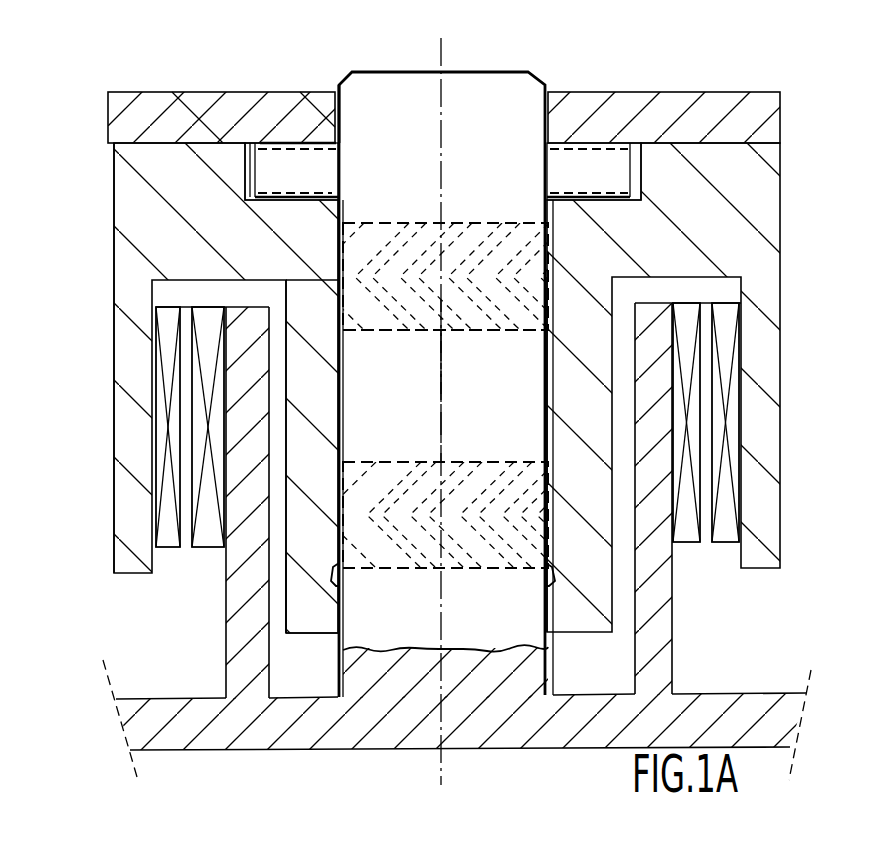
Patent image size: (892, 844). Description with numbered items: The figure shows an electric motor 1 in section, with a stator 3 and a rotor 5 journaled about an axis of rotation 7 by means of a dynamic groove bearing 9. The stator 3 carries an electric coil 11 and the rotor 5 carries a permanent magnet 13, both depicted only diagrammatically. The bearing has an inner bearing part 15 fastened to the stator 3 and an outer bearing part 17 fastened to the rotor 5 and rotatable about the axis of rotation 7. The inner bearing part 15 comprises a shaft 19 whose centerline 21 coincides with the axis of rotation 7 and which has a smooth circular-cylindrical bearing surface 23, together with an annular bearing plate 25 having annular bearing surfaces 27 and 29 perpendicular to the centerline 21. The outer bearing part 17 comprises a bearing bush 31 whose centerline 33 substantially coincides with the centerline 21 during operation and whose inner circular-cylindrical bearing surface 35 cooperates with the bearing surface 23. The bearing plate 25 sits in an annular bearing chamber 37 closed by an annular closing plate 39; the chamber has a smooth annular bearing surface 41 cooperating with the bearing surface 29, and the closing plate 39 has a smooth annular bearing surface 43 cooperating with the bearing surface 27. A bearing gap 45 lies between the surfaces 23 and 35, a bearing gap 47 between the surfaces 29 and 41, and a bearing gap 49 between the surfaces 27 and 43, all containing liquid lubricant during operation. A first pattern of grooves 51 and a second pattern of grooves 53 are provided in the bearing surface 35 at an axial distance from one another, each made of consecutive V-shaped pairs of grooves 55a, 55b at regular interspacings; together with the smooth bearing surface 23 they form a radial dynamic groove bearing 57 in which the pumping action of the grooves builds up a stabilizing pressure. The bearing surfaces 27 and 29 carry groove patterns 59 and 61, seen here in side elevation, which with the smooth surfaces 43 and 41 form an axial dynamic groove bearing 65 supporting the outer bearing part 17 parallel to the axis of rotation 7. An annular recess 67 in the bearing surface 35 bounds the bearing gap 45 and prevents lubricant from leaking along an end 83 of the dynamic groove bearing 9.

The electric motor 1 is at (101, 717).
The stator 3 is at (668, 655).
The rotor 5 is at (757, 187).
The axis of rotation 7 is at (446, 58).
The dynamic groove bearing 9 is at (312, 590).
The electric coil 11 is at (685, 545).
The permanent magnet 13 is at (727, 545).
The inner bearing part 15 is at (532, 70).
The outer bearing part 17 is at (267, 70).
The shaft 19 is at (476, 632).
The centerline 21 is at (452, 441).
The bearing surface 23 is at (343, 421).
The annular bearing plate 25 is at (600, 160).
The annular bearing surface 27 is at (562, 143).
The annular bearing surface 29 is at (548, 196).
The bearing bush 31 is at (553, 389).
The centerline 33 is at (446, 379).
The bearing surface 35 is at (340, 391).
The annular bearing chamber 37 is at (250, 178).
The annular closing plate 39 is at (109, 98).
The annular bearing surface 41 is at (610, 200).
The annular bearing surface 43 is at (317, 140).
The bearing gap 45 is at (343, 446).
The bearing gap 47 is at (302, 201).
The bearing gap 49 is at (290, 143).
The first pattern of grooves 51 is at (374, 223).
The second pattern of grooves 53 is at (376, 568).
The groove 55a is at (414, 224).
The groove 55b is at (420, 331).
The radial dynamic groove bearing 57 is at (323, 380).
The groove pattern 59 is at (337, 147).
The groove pattern 61 is at (291, 198).
The axial dynamic groove bearing 65 is at (206, 190).
The annular recess 67 is at (550, 578).
The end 83 is at (345, 640).